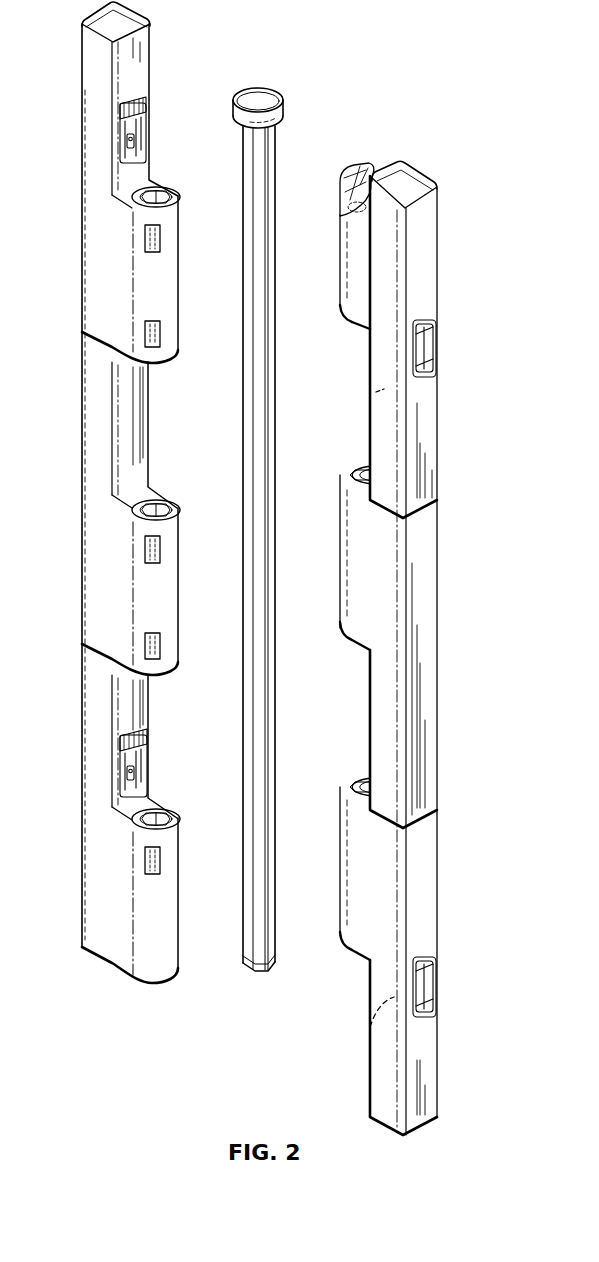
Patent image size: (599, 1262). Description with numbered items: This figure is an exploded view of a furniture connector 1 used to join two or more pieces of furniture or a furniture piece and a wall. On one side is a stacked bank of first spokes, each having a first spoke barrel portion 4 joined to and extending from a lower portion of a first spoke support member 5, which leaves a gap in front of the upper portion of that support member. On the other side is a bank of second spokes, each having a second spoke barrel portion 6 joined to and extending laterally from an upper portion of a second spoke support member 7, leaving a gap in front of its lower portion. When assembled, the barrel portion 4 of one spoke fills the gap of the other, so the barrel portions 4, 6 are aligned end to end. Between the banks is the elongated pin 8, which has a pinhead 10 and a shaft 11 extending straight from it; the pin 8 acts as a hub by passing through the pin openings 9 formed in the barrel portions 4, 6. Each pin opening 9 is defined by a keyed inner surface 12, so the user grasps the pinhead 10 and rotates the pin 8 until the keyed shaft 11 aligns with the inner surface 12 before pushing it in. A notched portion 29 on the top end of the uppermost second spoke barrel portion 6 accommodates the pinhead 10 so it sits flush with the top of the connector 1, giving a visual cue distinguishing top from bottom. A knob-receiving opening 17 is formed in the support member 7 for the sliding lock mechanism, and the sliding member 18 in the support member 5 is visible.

The furniture connector 1 is at (458, 160).
The first spoke barrel portion 4 is at (165, 350).
The first spoke support member 5 is at (95, 268).
The second spoke barrel portion 6 is at (347, 320).
The second spoke support member 7 is at (428, 453).
The pin 8 is at (262, 530).
The pin opening 9 is at (164, 187).
The pinhead 10 is at (254, 98).
The shaft 11 is at (250, 922).
The keyed inner surface 12 is at (377, 161).
The knob-receiving opening 17 is at (417, 356).
The sliding member 18 is at (124, 107).
The notched portion 29 is at (388, 172).